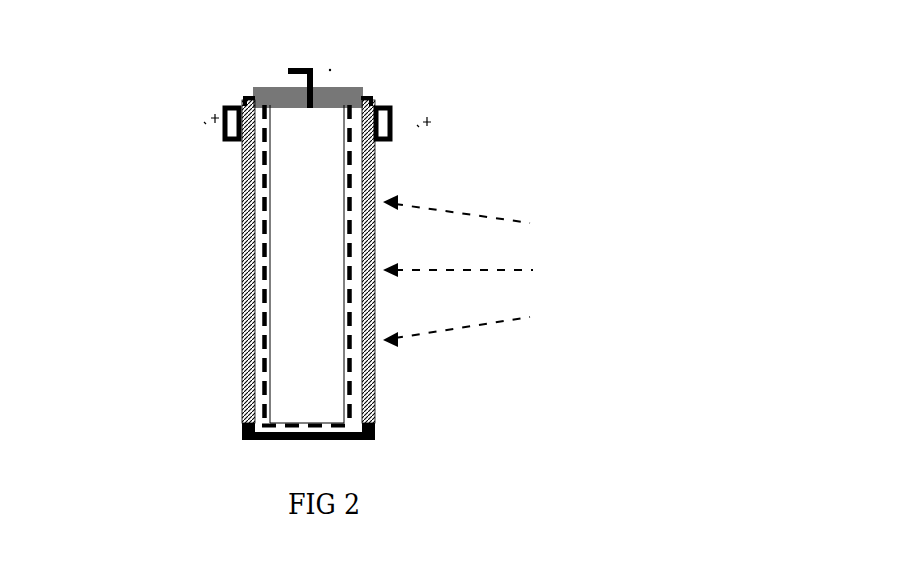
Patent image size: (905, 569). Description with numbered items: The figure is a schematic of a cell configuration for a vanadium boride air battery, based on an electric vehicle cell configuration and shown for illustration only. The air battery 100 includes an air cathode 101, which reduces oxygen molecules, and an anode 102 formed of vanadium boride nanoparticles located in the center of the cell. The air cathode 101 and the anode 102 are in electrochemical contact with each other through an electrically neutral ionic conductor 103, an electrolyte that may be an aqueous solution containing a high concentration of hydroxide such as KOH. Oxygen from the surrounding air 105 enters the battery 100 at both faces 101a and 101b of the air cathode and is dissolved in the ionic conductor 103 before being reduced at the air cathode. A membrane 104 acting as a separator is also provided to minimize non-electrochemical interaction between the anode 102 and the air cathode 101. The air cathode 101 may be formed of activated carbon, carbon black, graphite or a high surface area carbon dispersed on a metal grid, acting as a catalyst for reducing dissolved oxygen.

The air battery 100 is at (229, 67).
The air cathode 101 is at (279, 261).
The face of the air cathode 101a is at (228, 359).
The face of the air cathode 101b is at (388, 378).
The anode 102 is at (325, 128).
The electrically neutral ionic conductor 103 is at (347, 349).
The membrane 104 is at (252, 390).
The air 105 is at (485, 271).